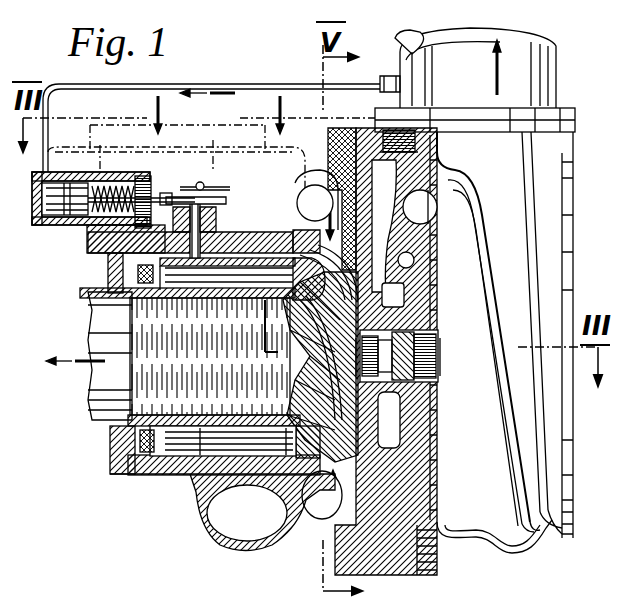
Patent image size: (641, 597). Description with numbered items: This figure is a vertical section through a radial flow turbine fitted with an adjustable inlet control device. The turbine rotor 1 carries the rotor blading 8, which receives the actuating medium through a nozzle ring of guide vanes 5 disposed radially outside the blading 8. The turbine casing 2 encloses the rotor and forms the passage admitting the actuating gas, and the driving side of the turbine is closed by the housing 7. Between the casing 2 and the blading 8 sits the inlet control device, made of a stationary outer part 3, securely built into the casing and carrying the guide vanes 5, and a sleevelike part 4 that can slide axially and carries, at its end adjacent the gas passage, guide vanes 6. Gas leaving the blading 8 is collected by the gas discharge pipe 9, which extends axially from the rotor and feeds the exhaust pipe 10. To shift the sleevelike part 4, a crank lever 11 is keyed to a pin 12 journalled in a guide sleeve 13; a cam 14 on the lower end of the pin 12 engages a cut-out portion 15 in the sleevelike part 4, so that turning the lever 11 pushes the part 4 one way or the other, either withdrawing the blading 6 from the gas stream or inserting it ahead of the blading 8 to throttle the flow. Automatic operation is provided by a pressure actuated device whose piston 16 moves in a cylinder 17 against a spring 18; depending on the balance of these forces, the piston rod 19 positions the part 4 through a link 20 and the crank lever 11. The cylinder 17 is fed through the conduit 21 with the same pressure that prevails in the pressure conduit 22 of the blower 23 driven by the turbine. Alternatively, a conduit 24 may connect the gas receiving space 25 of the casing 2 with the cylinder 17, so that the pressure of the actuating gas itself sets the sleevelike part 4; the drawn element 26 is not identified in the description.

The turbine rotor 1 is at (320, 367).
The turbine casing 2 is at (205, 500).
The outer part 3 is at (293, 477).
The sleevelike part 4 is at (250, 286).
The guide vanes 5 is at (322, 236).
The guide vanes 6 is at (300, 292).
The housing 7 is at (375, 560).
The rotor blading 8 is at (318, 402).
The gas discharge pipe 9 is at (186, 426).
The exhaust pipe 10 is at (98, 420).
The crank lever 11 is at (216, 200).
The pin 12 is at (216, 216).
The guide sleeve 13 is at (208, 232).
The cam 14 is at (182, 292).
The cut-out portion 15 is at (150, 290).
The piston 16 is at (75, 218).
The cylinder 17 is at (50, 225).
The spring 18 is at (108, 185).
The piston rod 19 is at (141, 209).
The link 20 is at (178, 200).
The conduit 21 is at (255, 75).
The pressure conduit 22 is at (475, 80).
The blower 23 is at (505, 342).
The conduit 24 is at (268, 140).
The gas receiving space 25 is at (296, 190).
The adjusting nut 26 is at (142, 180).